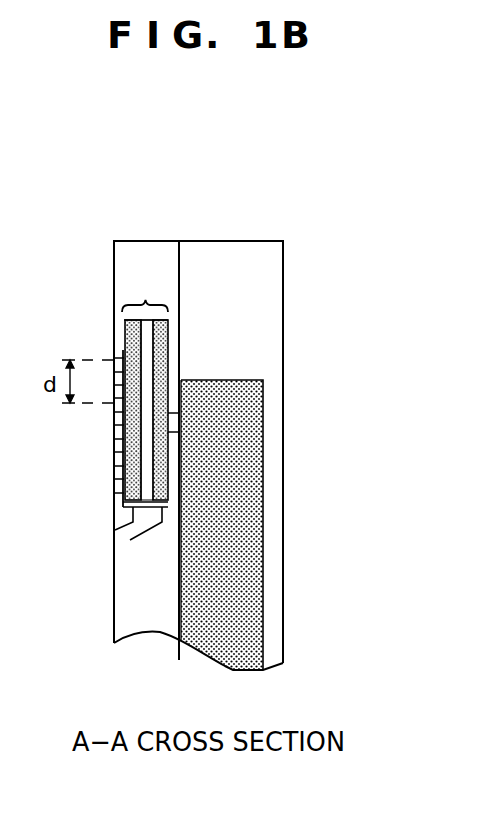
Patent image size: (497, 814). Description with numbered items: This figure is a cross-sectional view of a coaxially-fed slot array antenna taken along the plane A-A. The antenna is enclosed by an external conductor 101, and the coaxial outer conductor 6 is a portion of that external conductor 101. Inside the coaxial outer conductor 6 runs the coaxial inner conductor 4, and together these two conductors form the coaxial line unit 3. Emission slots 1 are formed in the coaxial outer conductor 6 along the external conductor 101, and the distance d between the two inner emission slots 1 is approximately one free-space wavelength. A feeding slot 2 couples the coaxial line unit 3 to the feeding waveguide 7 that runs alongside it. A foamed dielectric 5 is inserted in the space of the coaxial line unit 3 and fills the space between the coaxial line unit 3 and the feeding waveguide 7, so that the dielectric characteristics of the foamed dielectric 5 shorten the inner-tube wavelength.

The external conductor 101 is at (268, 298).
The emission slot 1 is at (113, 358).
The feeding slot 2 is at (178, 425).
The coaxial line unit 3 is at (145, 300).
The coaxial inner conductor 4 is at (150, 327).
The foamed dielectric 5 is at (200, 568).
The coaxial outer conductor 6 is at (174, 342).
The feeding waveguide 7 is at (263, 498).